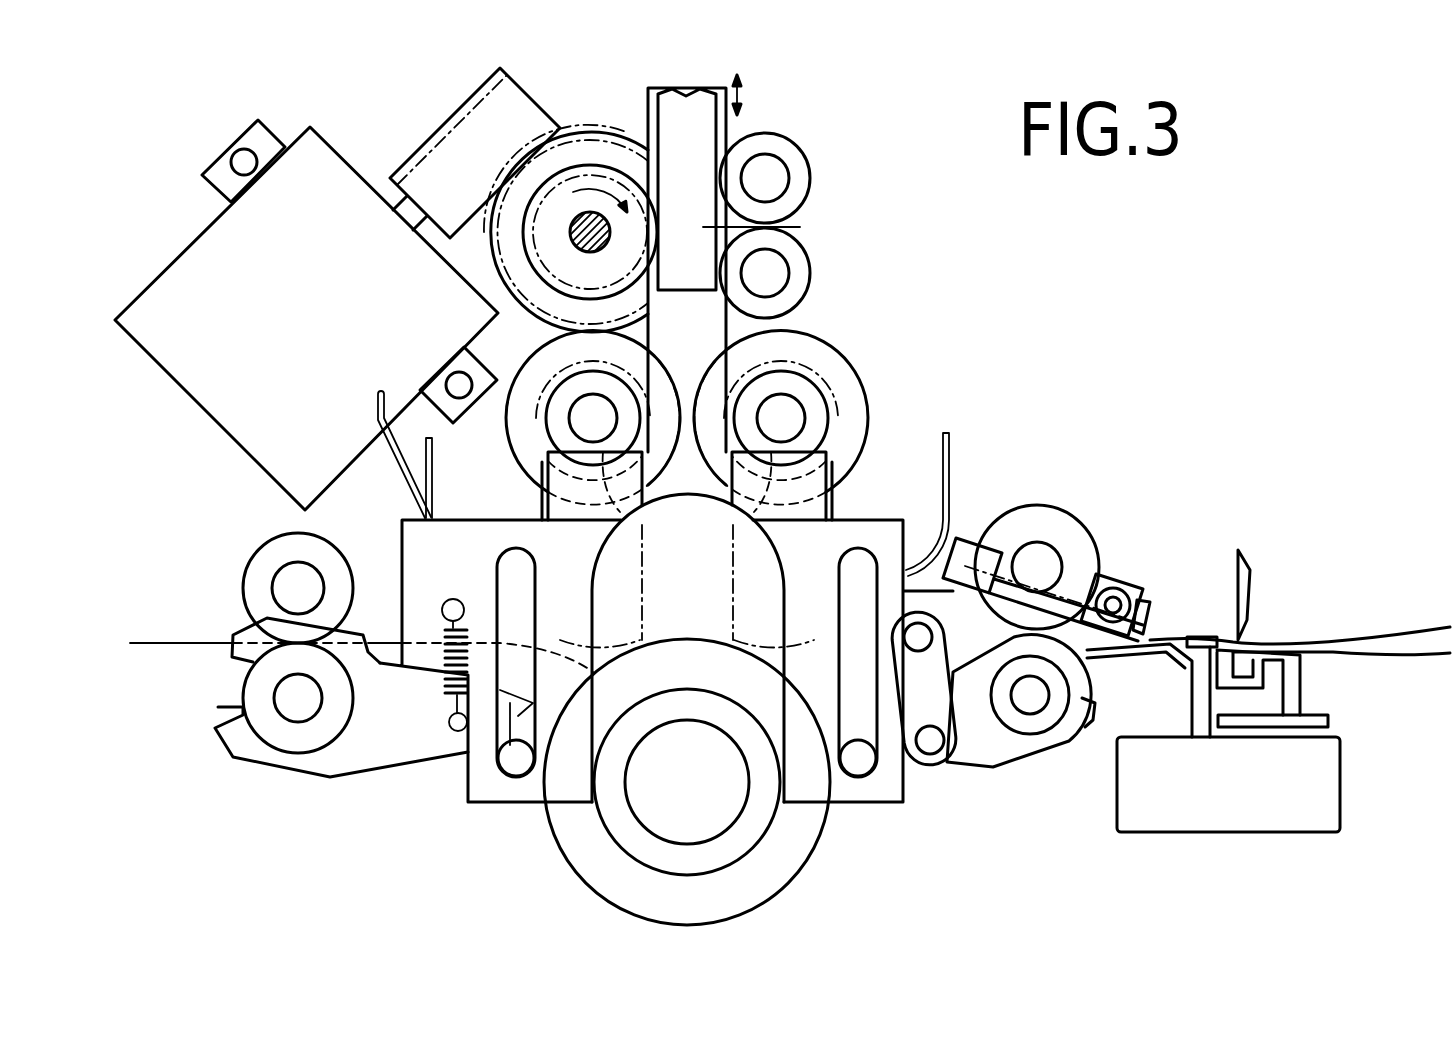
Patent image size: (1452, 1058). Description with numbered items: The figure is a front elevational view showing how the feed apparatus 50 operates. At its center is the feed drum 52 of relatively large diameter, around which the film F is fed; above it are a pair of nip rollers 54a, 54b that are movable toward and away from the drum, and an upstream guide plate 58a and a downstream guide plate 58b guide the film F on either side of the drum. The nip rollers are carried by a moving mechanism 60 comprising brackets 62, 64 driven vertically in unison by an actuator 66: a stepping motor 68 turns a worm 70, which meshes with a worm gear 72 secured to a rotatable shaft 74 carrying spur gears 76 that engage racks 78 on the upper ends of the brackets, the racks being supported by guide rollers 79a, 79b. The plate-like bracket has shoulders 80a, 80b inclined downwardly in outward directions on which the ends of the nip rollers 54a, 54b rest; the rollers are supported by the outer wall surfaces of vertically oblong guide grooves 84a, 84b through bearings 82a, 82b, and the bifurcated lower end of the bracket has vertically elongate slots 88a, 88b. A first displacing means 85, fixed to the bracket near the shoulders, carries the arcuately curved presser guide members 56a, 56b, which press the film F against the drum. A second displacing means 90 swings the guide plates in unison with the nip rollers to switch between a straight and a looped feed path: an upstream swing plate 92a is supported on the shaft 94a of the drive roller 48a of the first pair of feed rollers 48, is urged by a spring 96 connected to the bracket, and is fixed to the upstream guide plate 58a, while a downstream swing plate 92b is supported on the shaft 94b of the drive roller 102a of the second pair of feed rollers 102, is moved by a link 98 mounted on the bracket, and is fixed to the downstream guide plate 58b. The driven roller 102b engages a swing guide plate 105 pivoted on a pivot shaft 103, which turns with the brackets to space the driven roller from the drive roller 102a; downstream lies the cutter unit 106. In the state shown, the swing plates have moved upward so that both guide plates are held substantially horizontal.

The feed apparatus 50 is at (940, 181).
The moving mechanism 60 is at (610, 100).
The actuator 66 is at (415, 112).
The stepping motor 68 is at (182, 277).
The worm 70 is at (490, 100).
The worm gear 72 is at (585, 142).
The rotatable shaft 74 is at (605, 243).
The spur gears 76 is at (532, 223).
The racks 78 is at (800, 227).
The guide roller 79a is at (786, 160).
The guide roller 79b is at (812, 268).
The bracket 62 is at (700, 348).
The bracket 64 is at (687, 582).
The nip roller 54a is at (520, 432).
The nip roller 54b is at (843, 374).
The bearing 82a is at (560, 397).
The bearing 82b is at (822, 410).
The slot 88a is at (493, 590).
The slot 88b is at (857, 583).
The shoulder 80a is at (613, 452).
The shoulder 80b is at (808, 478).
The guide groove 84a is at (610, 612).
The guide groove 84b is at (750, 548).
The feed drum 52 is at (765, 883).
The upstream guide plate 58a is at (508, 757).
The downstream guide plate 58b is at (860, 780).
The presser guide member 56a is at (360, 453).
The presser guide member 56b is at (950, 452).
The first displacing means 85 is at (960, 408).
The first pair of feed rollers 48 is at (258, 556).
The film F is at (167, 647).
The second displacing means 90 is at (297, 792).
The drive roller 48a is at (253, 690).
The shaft 94a is at (293, 708).
The upstream swing plate 92a is at (363, 747).
The spring 96 is at (447, 690).
The link 98 is at (930, 713).
The downstream swing plate 92b is at (983, 757).
The shaft 94b is at (1032, 703).
The second pair of feed rollers 102 is at (1095, 512).
The drive roller 102a is at (1082, 693).
The driven roller 102b is at (1047, 515).
The swing guide plate 105 is at (1067, 607).
The pivot shaft 103 is at (1120, 607).
The cutter unit 106 is at (1248, 568).